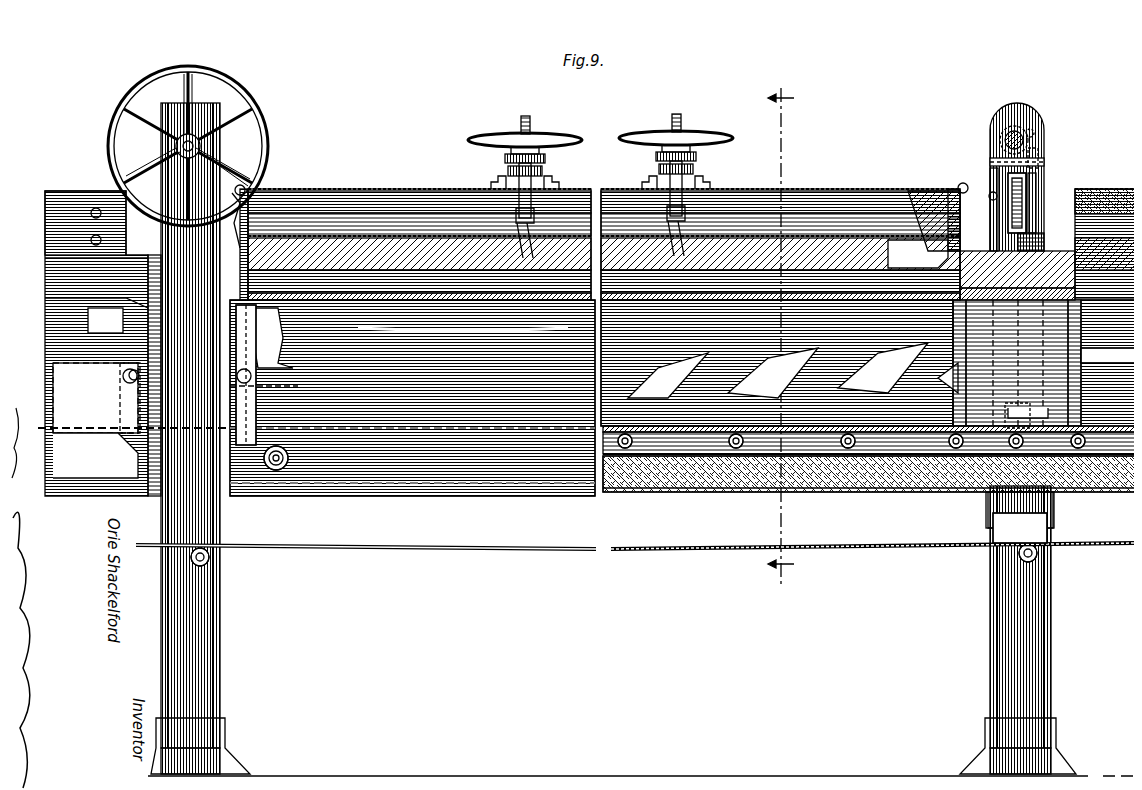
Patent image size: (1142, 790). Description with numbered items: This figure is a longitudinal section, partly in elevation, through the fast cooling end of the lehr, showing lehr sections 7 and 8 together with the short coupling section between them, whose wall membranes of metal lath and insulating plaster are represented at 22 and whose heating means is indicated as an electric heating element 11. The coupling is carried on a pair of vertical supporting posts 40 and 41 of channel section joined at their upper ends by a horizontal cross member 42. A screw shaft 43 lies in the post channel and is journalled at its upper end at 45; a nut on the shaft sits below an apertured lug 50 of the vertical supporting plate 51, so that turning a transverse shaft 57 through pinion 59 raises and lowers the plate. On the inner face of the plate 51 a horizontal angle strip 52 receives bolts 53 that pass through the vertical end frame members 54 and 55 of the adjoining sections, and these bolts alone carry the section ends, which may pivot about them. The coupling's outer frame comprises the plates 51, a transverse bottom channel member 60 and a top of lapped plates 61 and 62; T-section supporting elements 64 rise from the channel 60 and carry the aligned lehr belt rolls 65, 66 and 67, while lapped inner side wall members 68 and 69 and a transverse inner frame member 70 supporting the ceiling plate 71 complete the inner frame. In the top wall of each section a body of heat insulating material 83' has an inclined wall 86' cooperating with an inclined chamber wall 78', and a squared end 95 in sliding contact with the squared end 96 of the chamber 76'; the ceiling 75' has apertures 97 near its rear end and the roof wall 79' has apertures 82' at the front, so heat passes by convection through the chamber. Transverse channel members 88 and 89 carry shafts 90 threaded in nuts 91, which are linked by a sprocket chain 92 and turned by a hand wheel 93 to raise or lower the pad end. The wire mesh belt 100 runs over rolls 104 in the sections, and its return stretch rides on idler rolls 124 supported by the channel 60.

The lehr section 7 is at (414, 180).
The lehr section 8 is at (40, 185).
The electric heating element 11 is at (781, 332).
The metal lath wall construction 22 is at (665, 485).
The vertical supporting post 40 is at (1005, 617).
The vertical supporting post 41 is at (195, 645).
The horizontal cross member 42 is at (1000, 160).
The screw shaft 43 is at (1010, 185).
The upper journal 45 is at (1032, 150).
The apertured lug 50 is at (985, 190).
The vertical supporting plate 51 is at (985, 188).
The horizontal angle strip 52 is at (285, 388).
The bolt 53 is at (118, 372).
The vertical end frame member 54 is at (280, 405).
The vertical end frame member 55 is at (125, 410).
The transverse shaft 57 is at (1015, 125).
The pinion 59 is at (1028, 128).
The transverse bottom channel member 60 is at (205, 522).
The lapped top plate 61 is at (1025, 210).
The lapped top plate 62 is at (1036, 232).
The T-section supporting element 64 is at (1010, 490).
The lehr belt roll 65 is at (1010, 405).
The lehr belt roll 66 is at (242, 85).
The lehr belt roll 67 is at (1080, 352).
The lapped inner side wall member 68 is at (970, 340).
The lapped inner side wall member 69 is at (960, 352).
The transverse inner frame member 70 is at (980, 240).
The ceiling plate 71 is at (1110, 318).
The ceiling 75' is at (412, 398).
The chamber 76' is at (419, 211).
The inclined chamber wall 78' is at (934, 190).
The roof wall 79' is at (867, 212).
The aperture 82' is at (952, 196).
The body of heat insulating material 83' is at (780, 207).
The inclined wall 86' is at (780, 222).
The transverse supporting channel member 88 is at (685, 164).
The transverse supporting channel member 89 is at (534, 166).
The shaft 90 is at (523, 112).
The nut 91 is at (531, 146).
The sprocket chain 92 is at (497, 152).
The hand wheel 93 is at (497, 128).
The squared end 95 is at (262, 262).
The squared end of chamber 96 is at (240, 230).
The aperture 97 is at (274, 375).
The wire mesh belt 100 is at (692, 418).
The belt supporting roll 104 is at (780, 418).
The idler roll 124 is at (200, 555).